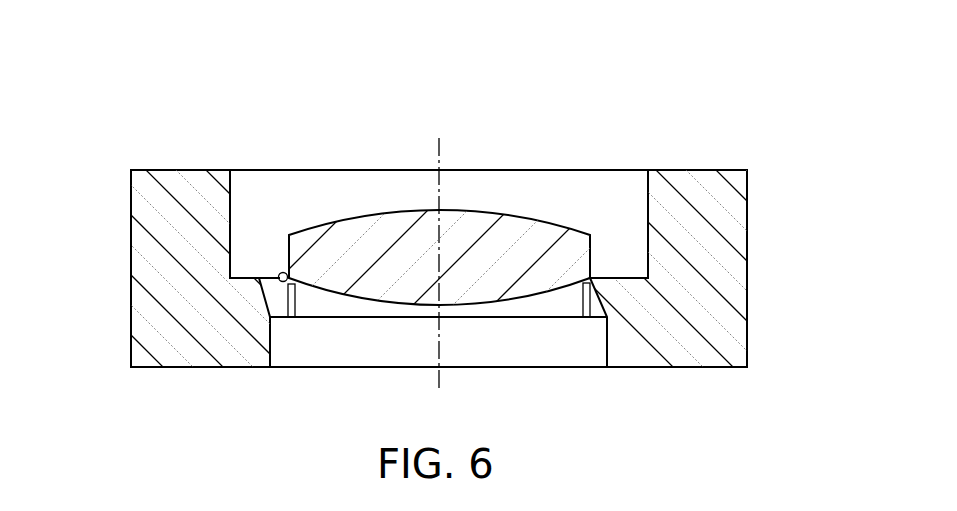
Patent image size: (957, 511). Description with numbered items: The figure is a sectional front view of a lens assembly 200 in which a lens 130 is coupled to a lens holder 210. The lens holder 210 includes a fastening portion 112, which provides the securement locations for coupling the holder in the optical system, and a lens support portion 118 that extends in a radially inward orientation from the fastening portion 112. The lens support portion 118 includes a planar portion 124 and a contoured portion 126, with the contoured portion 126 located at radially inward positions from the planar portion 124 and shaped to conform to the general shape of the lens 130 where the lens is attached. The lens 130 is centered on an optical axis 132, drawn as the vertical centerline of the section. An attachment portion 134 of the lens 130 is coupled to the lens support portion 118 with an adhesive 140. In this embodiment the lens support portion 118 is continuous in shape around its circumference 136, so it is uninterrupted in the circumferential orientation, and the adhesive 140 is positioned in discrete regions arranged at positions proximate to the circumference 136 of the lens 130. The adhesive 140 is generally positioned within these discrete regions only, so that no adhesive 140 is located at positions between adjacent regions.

The lens assembly 200 is at (697, 82).
The lens holder 210 is at (166, 134).
The fastening portion 112 is at (695, 170).
The planar portion 124 is at (626, 278).
The lens support portion 118 is at (607, 320).
The optical axis 132 is at (438, 145).
The lens 130 is at (446, 198).
The circumference 136 is at (288, 242).
The attachment portion 134 is at (295, 290).
The contoured portion 126 is at (588, 280).
The adhesive 140 is at (283, 282).